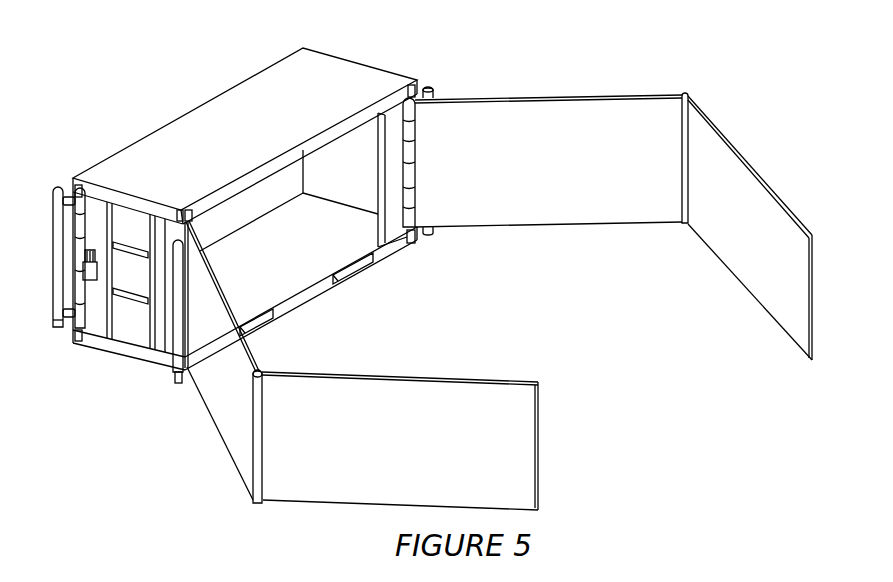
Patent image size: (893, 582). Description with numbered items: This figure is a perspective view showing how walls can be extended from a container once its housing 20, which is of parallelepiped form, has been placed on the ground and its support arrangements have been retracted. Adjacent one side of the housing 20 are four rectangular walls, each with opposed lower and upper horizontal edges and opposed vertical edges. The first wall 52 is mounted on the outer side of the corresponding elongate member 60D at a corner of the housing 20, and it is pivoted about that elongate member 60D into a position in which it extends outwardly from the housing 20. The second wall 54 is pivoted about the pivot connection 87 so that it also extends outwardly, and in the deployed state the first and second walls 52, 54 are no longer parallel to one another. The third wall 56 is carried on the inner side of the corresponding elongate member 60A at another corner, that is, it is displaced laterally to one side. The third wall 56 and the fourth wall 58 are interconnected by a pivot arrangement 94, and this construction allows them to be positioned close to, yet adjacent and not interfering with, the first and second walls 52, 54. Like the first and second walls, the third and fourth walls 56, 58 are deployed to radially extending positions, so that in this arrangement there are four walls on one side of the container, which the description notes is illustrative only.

The housing 20 is at (172, 123).
The elongate member 60D is at (181, 206).
The elongate member 60A is at (425, 77).
The third wall 56 is at (552, 95).
The pivot arrangement 94 is at (688, 92).
The fourth wall 58 is at (740, 152).
The first wall 52 is at (227, 420).
The pivot connection 87 is at (255, 503).
The second wall 54 is at (300, 502).